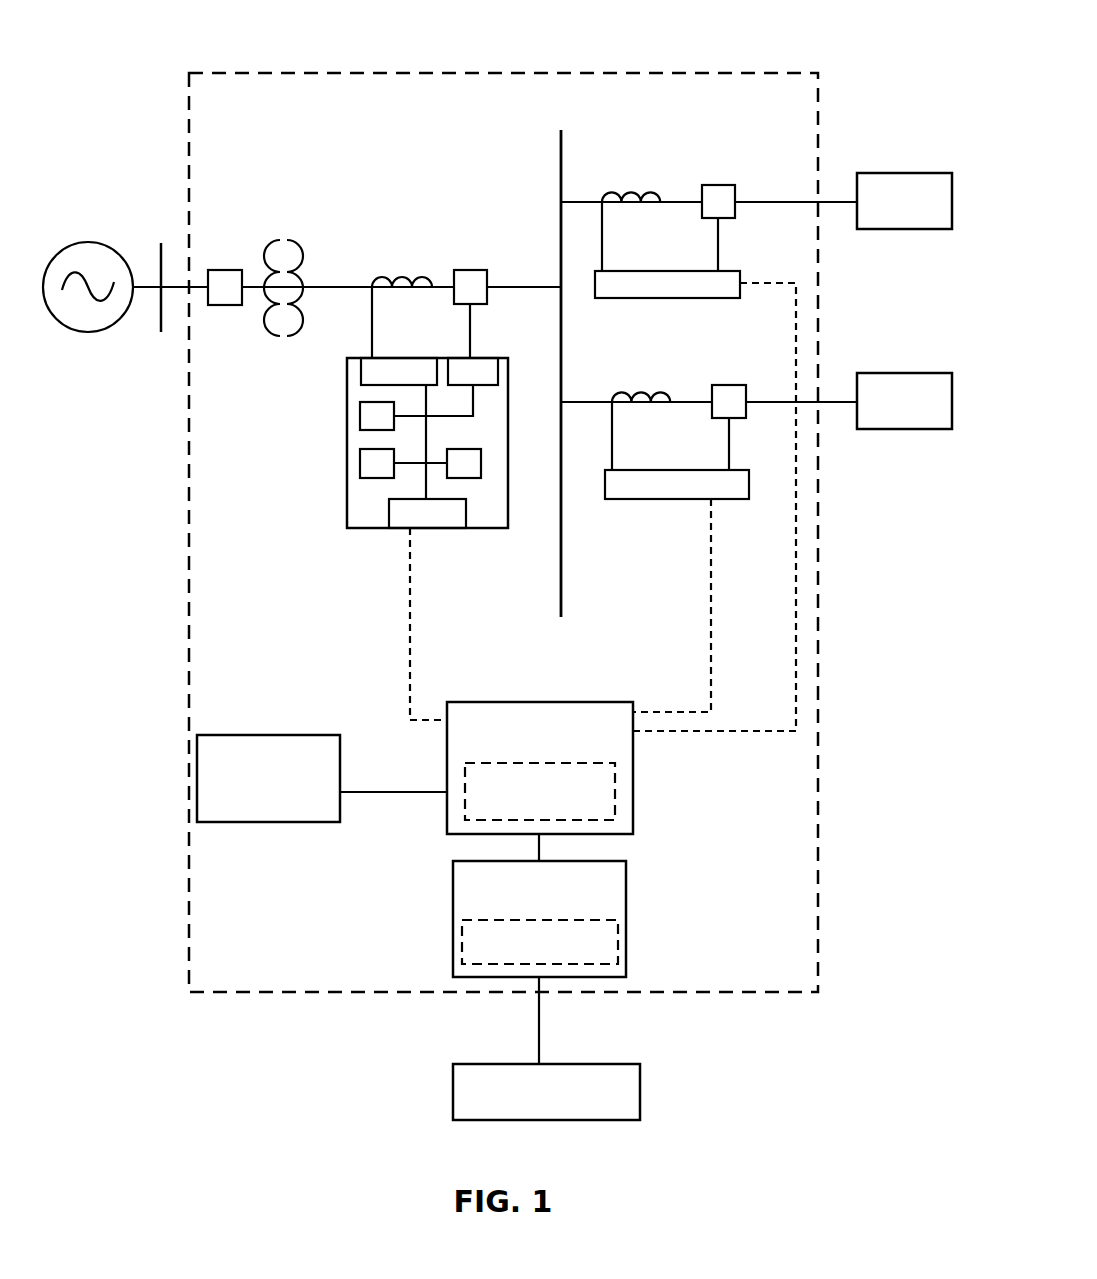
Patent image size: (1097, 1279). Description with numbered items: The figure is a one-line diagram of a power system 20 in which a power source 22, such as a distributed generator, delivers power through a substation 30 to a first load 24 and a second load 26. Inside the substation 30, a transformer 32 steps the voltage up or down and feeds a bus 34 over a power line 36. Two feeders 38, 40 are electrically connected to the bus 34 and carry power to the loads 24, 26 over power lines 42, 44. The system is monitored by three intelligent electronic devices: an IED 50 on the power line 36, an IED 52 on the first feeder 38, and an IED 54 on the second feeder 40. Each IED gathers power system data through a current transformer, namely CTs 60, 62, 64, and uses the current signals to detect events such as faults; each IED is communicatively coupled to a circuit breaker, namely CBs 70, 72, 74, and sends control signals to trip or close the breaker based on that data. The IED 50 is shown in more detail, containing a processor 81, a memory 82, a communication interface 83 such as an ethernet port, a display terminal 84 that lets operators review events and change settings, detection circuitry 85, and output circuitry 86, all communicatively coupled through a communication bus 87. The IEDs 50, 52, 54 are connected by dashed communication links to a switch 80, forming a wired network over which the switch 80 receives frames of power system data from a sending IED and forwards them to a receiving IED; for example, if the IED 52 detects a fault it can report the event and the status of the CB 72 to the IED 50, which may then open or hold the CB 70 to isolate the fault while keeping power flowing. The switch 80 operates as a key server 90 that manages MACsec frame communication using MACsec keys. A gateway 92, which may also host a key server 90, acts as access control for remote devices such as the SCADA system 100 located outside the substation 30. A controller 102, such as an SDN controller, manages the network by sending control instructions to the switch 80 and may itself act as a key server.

The power system 20 is at (842, 27).
The power source 22 is at (88, 256).
The load 24 is at (904, 171).
The load 26 is at (904, 371).
The substation 30 is at (477, 532).
The transformer 32 is at (283, 258).
The bus 34 is at (540, 373).
The power line 36 is at (524, 257).
The feeder 38 is at (758, 250).
The feeder 40 is at (761, 452).
The power line 42 is at (796, 172).
The power line 44 is at (801, 372).
The IED 50 is at (426, 447).
The IED 52 is at (667, 308).
The IED 54 is at (677, 510).
The current transformer 60 is at (402, 289).
The current transformer 62 is at (631, 203).
The current transformer 64 is at (640, 403).
The circuit breaker 70 is at (470, 284).
The circuit breaker 72 is at (717, 198).
The circuit breaker 74 is at (726, 398).
The switch 80 is at (520, 738).
The processor 81 is at (349, 405).
The memory 82 is at (496, 463).
The communication interface 83 is at (428, 539).
The display terminal 84 is at (349, 453).
The detection circuitry 85 is at (399, 350).
The output circuitry 86 is at (493, 358).
The communication bus 87 is at (470, 400).
The key server 90 is at (511, 776).
The gateway 92 is at (507, 918).
The SCADA system 100 is at (516, 1074).
The controller 102 is at (288, 767).